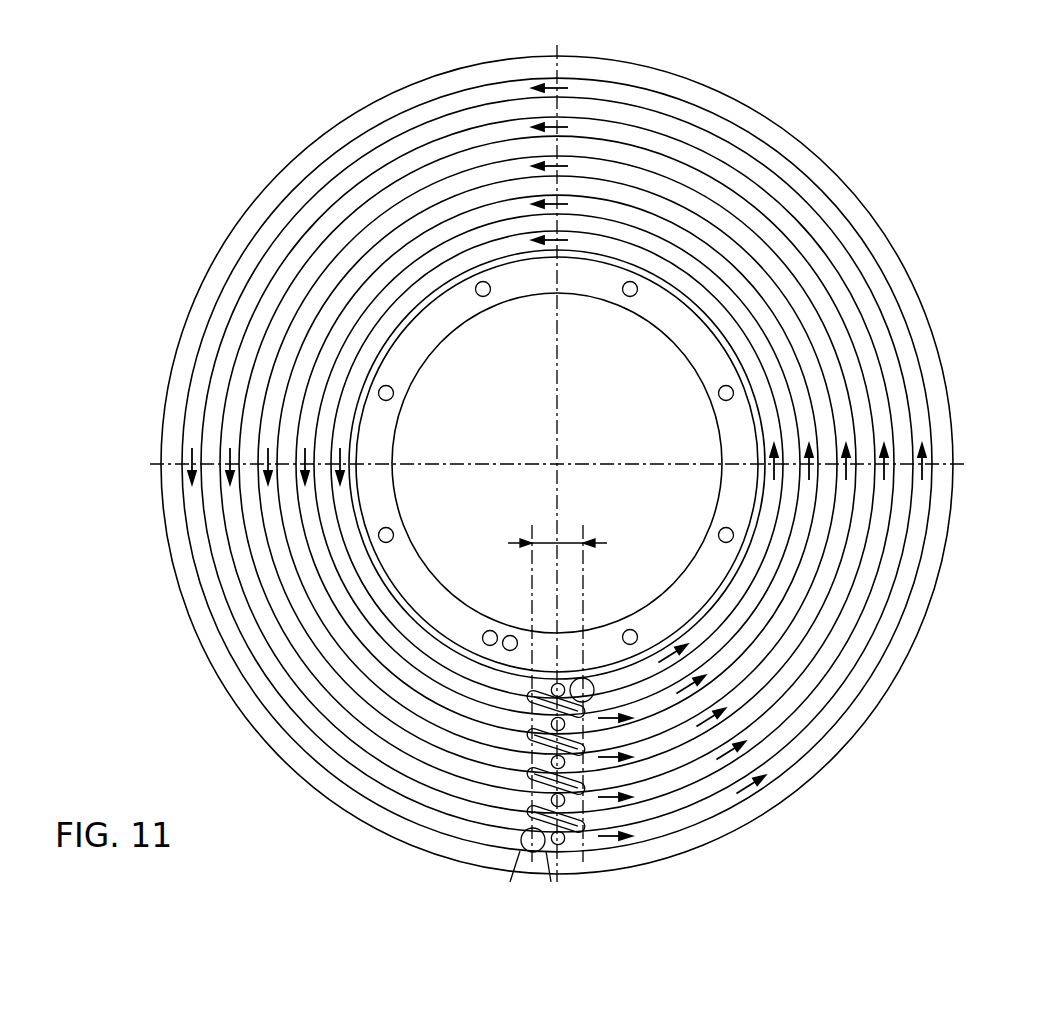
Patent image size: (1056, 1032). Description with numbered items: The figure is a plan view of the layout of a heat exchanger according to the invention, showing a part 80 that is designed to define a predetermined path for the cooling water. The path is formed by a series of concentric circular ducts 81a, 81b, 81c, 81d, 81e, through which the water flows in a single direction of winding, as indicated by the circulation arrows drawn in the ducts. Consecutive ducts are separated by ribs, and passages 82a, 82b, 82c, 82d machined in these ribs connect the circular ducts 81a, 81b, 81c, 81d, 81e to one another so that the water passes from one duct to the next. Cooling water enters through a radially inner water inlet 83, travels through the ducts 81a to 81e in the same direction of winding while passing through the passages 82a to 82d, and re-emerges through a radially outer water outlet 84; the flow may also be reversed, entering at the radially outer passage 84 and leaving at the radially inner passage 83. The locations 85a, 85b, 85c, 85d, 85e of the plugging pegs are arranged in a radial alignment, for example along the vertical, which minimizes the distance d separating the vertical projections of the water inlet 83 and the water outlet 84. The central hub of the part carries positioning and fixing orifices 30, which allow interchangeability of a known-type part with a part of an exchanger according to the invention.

The part 80 is at (912, 264).
The circular duct 81a is at (758, 573).
The circular duct 81b is at (763, 622).
The circular duct 81c is at (770, 672).
The circular duct 81d is at (780, 720).
The circular duct 81e is at (772, 770).
The passage 82a is at (527, 712).
The passage 82b is at (527, 749).
The passage 82c is at (527, 788).
The passage 82d is at (528, 822).
The radially inner water inlet 83 is at (594, 698).
The radially outer water outlet 84 is at (525, 850).
The location of plugging peg 85a is at (553, 848).
The location of plugging peg 85b is at (576, 808).
The location of plugging peg 85c is at (566, 768).
The location of plugging peg 85d is at (566, 730).
The location of plugging peg 85e is at (566, 696).
The positioning and fixing orifices 30 is at (548, 543).
The distance d is at (460, 580).